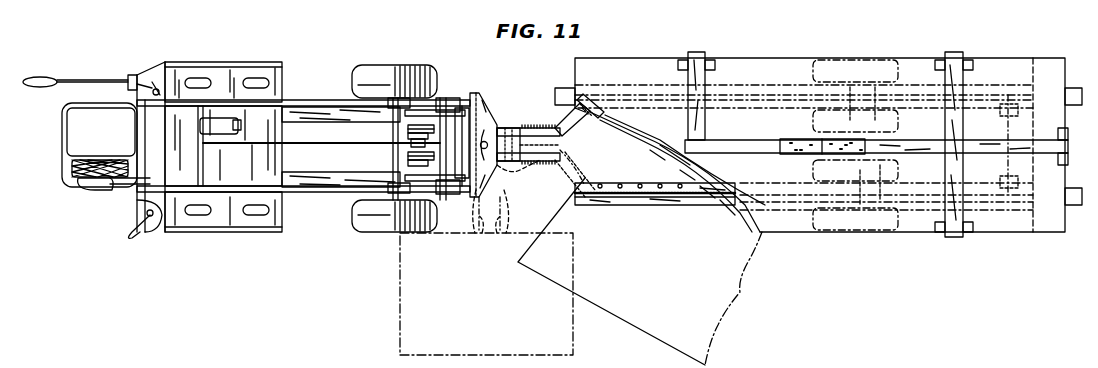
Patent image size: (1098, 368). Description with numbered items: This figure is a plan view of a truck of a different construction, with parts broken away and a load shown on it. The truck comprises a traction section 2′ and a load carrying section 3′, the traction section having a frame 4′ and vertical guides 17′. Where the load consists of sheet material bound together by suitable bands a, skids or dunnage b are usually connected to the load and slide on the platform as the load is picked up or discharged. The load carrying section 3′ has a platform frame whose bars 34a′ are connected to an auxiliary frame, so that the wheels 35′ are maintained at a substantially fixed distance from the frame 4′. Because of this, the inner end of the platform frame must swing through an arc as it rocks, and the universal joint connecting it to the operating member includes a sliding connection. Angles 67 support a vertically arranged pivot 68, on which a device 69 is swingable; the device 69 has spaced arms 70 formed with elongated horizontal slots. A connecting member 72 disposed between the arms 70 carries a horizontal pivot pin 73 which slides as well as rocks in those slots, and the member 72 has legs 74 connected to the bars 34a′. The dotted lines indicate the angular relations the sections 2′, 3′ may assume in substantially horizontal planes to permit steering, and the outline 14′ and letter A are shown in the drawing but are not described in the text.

The traction section 2′ is at (246, 150).
The frame 4′ is at (330, 118).
The guides 17′ is at (433, 100).
The angles 67 is at (481, 100).
The vertically arranged pivot 68 is at (489, 120).
The horizontal pivot pin 73 is at (503, 128).
The device 69 is at (522, 128).
The spaced arms 70 is at (548, 130).
The legs 74 is at (583, 185).
The connecting member 72 is at (505, 170).
The load carrying section 3′ is at (810, 160).
The frame bars 34a′ is at (645, 195).
The cross posts A is at (913, 226).
The wheels 35′ is at (866, 62).
The bands a is at (882, 147).
The skids or dunnage b is at (1073, 106).
The phantom outline 14′ is at (581, 273).